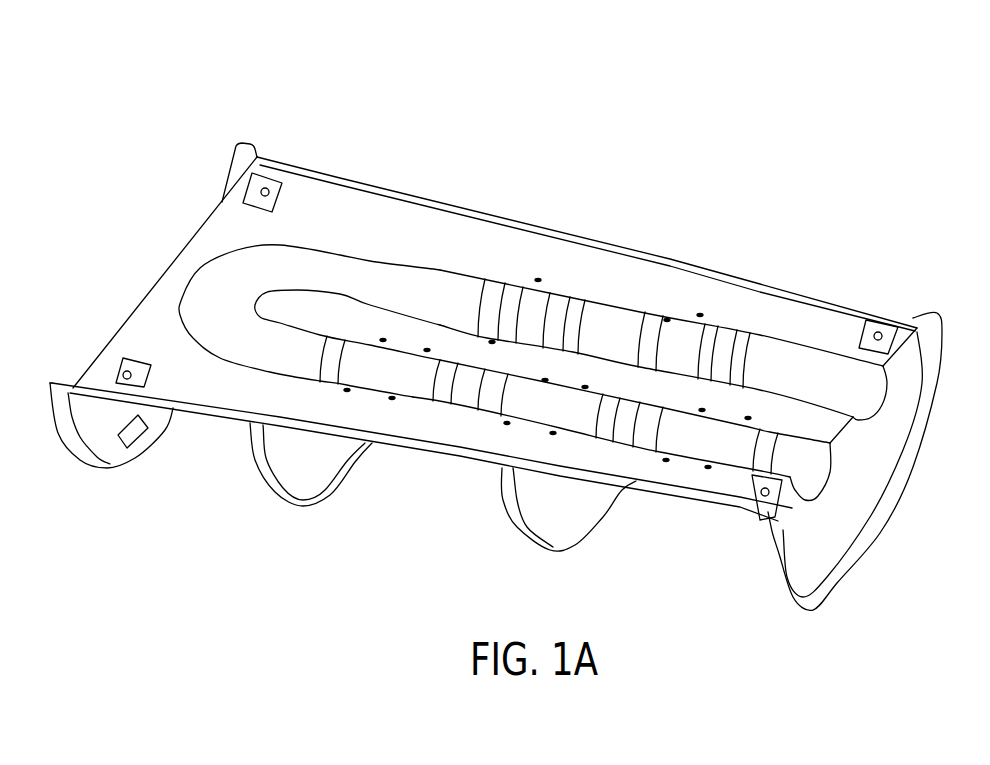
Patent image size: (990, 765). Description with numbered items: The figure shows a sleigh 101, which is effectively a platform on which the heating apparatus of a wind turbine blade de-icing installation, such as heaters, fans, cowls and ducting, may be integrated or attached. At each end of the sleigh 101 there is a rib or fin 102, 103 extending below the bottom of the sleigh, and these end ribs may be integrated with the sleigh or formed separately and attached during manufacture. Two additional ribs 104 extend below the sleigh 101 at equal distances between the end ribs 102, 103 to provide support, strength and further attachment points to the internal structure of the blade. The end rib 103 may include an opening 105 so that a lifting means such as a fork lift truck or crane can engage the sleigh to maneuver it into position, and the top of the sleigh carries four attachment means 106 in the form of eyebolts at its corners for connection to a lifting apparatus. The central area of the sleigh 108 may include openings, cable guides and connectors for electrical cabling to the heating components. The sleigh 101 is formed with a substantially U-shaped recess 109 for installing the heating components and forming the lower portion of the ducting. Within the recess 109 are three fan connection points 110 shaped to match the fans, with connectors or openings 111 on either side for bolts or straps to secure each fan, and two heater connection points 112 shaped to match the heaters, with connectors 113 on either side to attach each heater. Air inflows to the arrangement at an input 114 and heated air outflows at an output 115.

The sleigh 101 is at (355, 207).
The end rib 102 is at (843, 563).
The end rib 103 is at (90, 432).
The additional rib 104 is at (280, 470).
The opening 105 is at (138, 445).
The attachment means 106 is at (266, 188).
The central area of the sleigh 108 is at (283, 312).
The recess 109 is at (203, 285).
The fan connection point 110 is at (365, 368).
The connector or opening 111 is at (427, 352).
The heater connection point 112 is at (533, 289).
The connector 113 is at (492, 342).
The input 114 is at (810, 478).
The output 115 is at (870, 397).